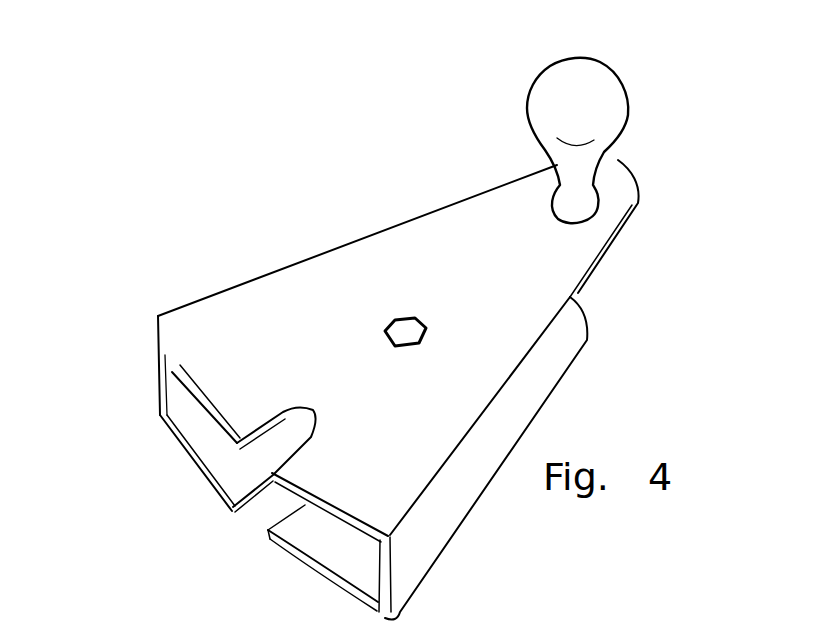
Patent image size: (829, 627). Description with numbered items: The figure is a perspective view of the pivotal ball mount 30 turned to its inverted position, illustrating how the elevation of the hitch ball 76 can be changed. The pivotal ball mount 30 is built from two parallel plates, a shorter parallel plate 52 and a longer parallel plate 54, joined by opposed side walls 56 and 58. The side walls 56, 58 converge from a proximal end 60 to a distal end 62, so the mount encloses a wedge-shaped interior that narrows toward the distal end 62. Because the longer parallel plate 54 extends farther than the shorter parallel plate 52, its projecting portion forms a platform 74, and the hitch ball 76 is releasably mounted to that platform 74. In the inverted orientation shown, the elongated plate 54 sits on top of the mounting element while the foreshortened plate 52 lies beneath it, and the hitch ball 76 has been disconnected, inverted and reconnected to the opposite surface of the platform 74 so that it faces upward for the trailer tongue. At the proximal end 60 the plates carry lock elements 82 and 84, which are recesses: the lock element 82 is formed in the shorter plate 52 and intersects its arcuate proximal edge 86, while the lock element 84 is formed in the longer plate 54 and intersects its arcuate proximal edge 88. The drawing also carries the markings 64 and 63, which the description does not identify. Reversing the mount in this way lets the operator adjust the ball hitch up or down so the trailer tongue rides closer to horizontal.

The pivotal ball mount 30 is at (348, 235).
The longer parallel plate 54 is at (438, 228).
The distal end 62 is at (501, 233).
The aperture 64 is at (421, 316).
The hitch ball 76 is at (615, 90).
The platform 74 is at (623, 203).
The side wall 58 is at (442, 532).
The proximal end 60 is at (368, 506).
The front face 63 is at (340, 557).
The lock element 82 is at (268, 517).
The side wall 56 is at (172, 408).
The shorter parallel plate 52 is at (193, 430).
The proximal edge 88 is at (170, 372).
The lock element 84 is at (283, 413).
The proximal edge 86 is at (192, 460).